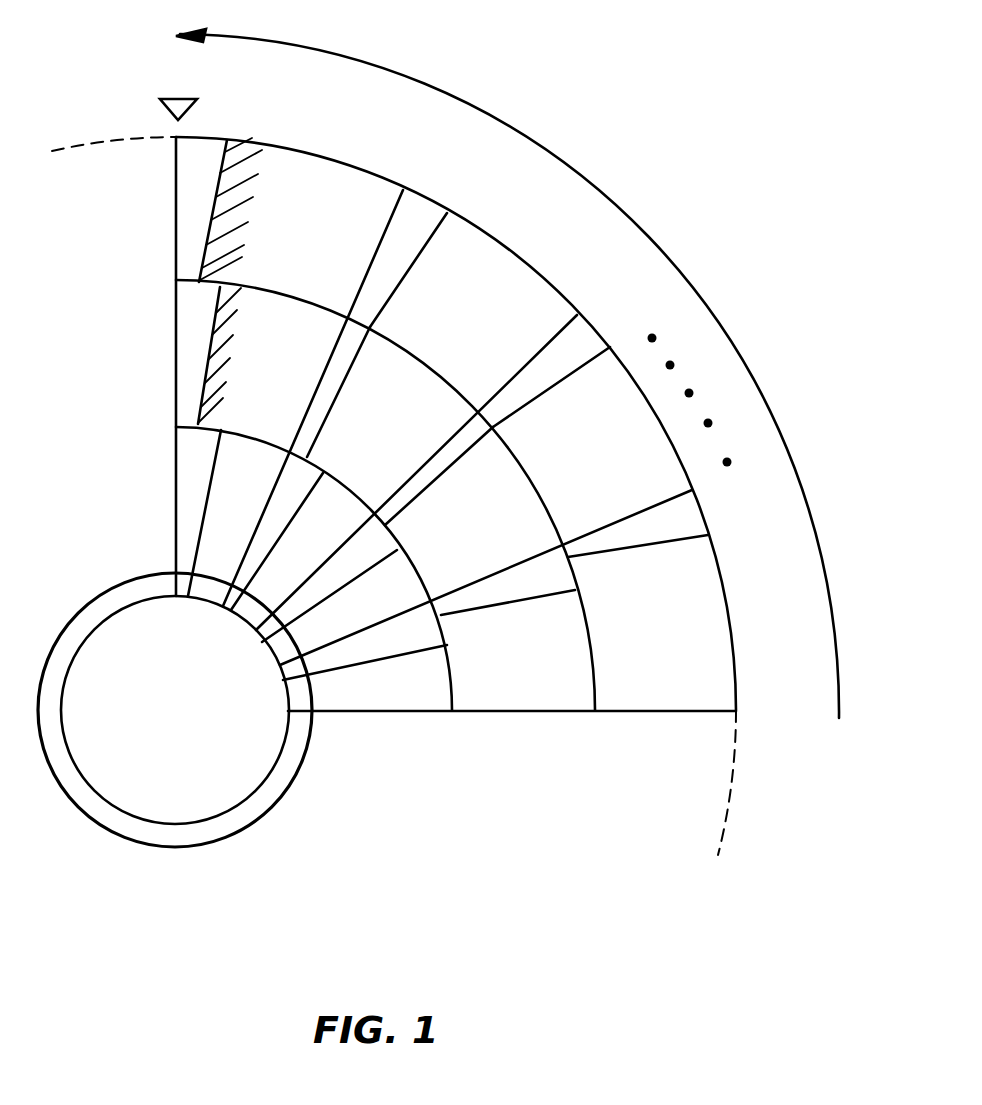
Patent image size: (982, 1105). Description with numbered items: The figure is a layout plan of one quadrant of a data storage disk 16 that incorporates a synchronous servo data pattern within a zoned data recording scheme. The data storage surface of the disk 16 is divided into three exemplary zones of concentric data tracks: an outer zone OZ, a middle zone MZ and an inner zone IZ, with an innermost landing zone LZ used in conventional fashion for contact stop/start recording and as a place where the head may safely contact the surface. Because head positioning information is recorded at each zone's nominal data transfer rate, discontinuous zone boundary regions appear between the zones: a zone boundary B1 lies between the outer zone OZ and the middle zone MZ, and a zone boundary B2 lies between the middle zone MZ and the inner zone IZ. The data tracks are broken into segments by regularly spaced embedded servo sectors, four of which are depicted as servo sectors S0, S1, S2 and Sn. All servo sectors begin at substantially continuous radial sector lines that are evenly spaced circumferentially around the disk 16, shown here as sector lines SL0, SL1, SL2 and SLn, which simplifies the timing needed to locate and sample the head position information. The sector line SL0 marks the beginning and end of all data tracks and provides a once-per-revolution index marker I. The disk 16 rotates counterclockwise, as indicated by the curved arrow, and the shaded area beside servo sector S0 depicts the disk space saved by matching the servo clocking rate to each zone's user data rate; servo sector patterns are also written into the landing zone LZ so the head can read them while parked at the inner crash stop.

The index marker I is at (191, 100).
The data storage disk 16 is at (728, 600).
The landing zone LZ is at (268, 788).
The inner zone IZ is at (399, 678).
The middle zone MZ is at (500, 665).
The outer zone OZ is at (579, 473).
The zone boundary B1 is at (595, 720).
The zone boundary B2 is at (450, 720).
The servo sector S0 is at (207, 150).
The servo sector S1 is at (423, 204).
The servo sector S2 is at (590, 333).
The servo sector Sn is at (697, 518).
The sector line SL0 is at (176, 239).
The sector line SL1 is at (372, 256).
The sector line SL2 is at (527, 360).
The sector line SLn is at (622, 518).